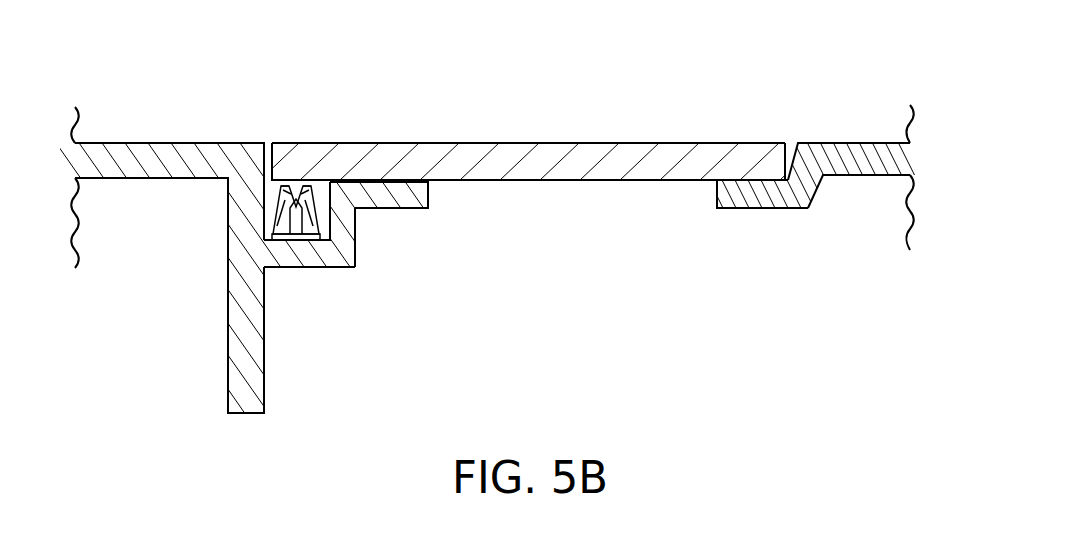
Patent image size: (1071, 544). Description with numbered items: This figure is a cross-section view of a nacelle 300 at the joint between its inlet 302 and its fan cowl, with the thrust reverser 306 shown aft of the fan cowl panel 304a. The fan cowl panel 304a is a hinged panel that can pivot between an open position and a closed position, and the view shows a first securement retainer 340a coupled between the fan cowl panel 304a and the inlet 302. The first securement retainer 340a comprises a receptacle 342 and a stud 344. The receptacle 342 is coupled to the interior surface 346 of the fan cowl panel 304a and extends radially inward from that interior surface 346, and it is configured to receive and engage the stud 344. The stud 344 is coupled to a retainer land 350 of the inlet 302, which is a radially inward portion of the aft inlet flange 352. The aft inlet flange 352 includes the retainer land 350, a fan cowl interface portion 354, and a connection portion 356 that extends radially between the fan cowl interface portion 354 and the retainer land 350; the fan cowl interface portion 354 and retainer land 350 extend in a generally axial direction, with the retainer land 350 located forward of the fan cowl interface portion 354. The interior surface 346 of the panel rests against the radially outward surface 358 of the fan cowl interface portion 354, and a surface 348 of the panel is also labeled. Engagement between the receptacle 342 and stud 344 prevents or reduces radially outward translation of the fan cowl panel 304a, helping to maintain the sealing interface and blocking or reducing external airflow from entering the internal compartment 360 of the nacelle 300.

The nacelle 300 is at (704, 69).
The inlet 302 is at (149, 160).
The fan cowl panel 304a is at (490, 160).
The thrust reverser 306 is at (857, 160).
The first securement retainer 340a is at (267, 184).
The receptacle 342 is at (278, 188).
The stud 344 is at (293, 210).
The interior surface 346 is at (532, 182).
The outer surface 348 is at (565, 160).
The retainer land 350 is at (308, 252).
The aft inlet flange 352 is at (428, 362).
The fan cowl interface portion 354 is at (387, 198).
The connection portion 356 is at (340, 225).
The radially outward surface 358 is at (411, 180).
The internal compartment 360 is at (652, 351).